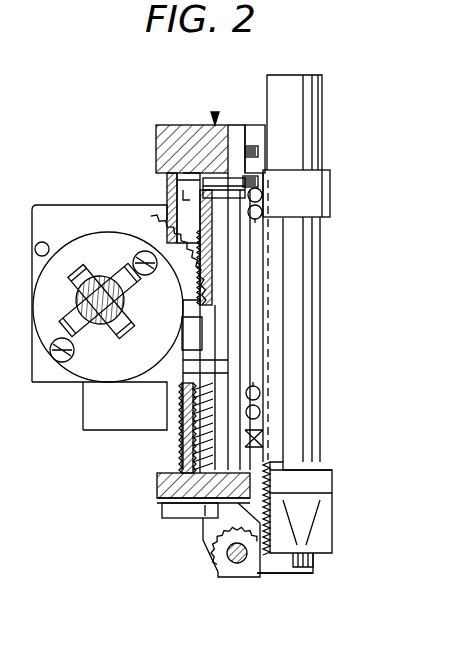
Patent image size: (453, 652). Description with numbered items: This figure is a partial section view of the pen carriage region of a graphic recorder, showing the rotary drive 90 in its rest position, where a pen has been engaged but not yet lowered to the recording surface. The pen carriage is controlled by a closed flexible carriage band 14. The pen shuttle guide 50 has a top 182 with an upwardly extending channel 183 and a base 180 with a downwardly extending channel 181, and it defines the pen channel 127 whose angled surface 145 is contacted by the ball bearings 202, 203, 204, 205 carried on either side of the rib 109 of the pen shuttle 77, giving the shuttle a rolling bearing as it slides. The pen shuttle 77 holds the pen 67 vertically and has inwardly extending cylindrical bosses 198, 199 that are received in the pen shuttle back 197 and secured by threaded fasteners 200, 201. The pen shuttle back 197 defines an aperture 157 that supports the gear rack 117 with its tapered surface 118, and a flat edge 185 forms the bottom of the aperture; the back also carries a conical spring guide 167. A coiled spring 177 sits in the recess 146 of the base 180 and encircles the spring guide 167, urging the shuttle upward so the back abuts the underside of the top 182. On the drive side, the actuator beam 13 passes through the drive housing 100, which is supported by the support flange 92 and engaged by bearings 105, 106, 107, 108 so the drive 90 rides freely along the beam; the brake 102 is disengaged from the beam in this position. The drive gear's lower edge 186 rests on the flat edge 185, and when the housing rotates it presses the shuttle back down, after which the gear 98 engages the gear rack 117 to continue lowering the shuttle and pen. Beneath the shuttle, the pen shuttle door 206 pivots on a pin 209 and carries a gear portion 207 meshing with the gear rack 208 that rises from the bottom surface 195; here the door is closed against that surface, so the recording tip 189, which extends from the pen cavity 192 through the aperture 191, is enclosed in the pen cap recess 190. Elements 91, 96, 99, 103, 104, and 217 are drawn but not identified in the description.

The actuator beam 13 is at (130, 318).
The carriage band 14 is at (225, 337).
The pen shuttle guide 50 is at (215, 112).
The pen 67 is at (322, 95).
The pen shuttle 77 is at (322, 197).
The rotary drive 90 is at (100, 395).
The spring seat 91 is at (180, 418).
The support flange 92 is at (42, 208).
The pin hole 96 is at (42, 246).
The gear 98 is at (68, 305).
The arm 99 is at (118, 258).
The drive housing 100 is at (50, 357).
The brake 102 is at (83, 262).
The arm 103 is at (127, 250).
The bottom wall 104 is at (97, 384).
The bearing 105 is at (120, 232).
The bearing 106 is at (75, 352).
The bearing 107 is at (168, 218).
The bearing 108 is at (100, 330).
The rib 109 is at (257, 258).
The gear rack 117 is at (213, 258).
The tapered surface 118 is at (210, 277).
The pen channel 127 is at (237, 140).
The angled surface 145 is at (255, 135).
The recess 146 is at (175, 505).
The aperture 157 is at (210, 297).
The spring guide 167 is at (185, 434).
The coiled spring 177 is at (185, 450).
The base 180 is at (332, 490).
The channel 181 is at (160, 477).
The top 182 is at (185, 126).
The channel 183 is at (168, 165).
The flat edge 185 is at (180, 305).
The lower edge 186 is at (217, 317).
The recording tip 189 is at (300, 530).
The pen cap recess 190 is at (313, 567).
The aperture 191 is at (300, 545).
The pen cavity 192 is at (300, 520).
The bottom surface 195 is at (305, 555).
The pen shuttle back 197 is at (235, 360).
The boss 198 is at (250, 180).
The boss 199 is at (230, 380).
The threaded fastener 200 is at (186, 168).
The threaded fastener 201 is at (180, 385).
The ball bearing 202 is at (265, 185).
The ball bearing 203 is at (283, 222).
The ball bearing 204 is at (260, 395).
The ball bearing 205 is at (260, 412).
The pen shuttle door 206 is at (285, 575).
The gear portion 207 is at (207, 565).
The gear rack 208 is at (290, 490).
The pin 209 is at (240, 563).
The block top 217 is at (335, 460).